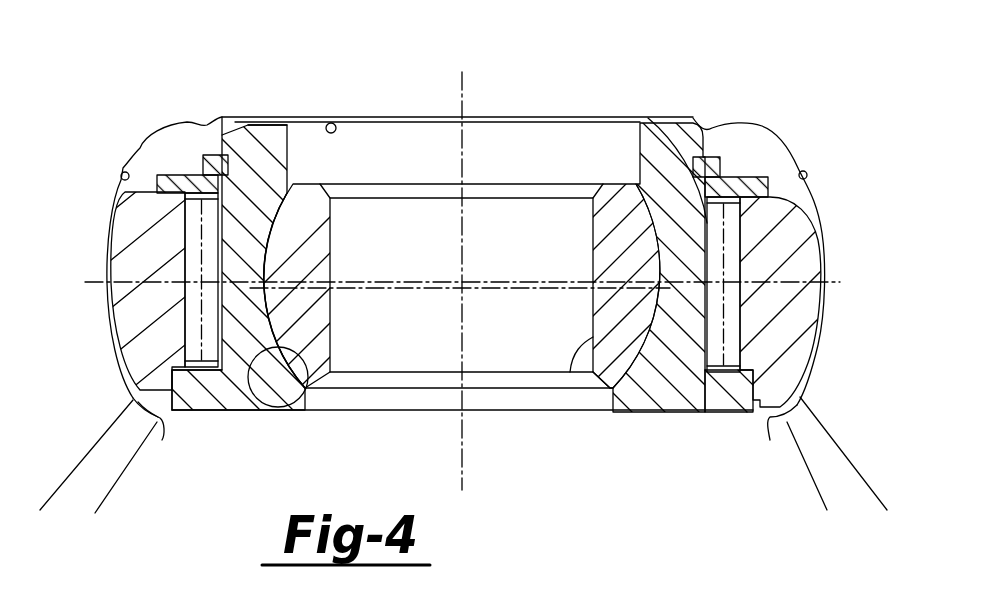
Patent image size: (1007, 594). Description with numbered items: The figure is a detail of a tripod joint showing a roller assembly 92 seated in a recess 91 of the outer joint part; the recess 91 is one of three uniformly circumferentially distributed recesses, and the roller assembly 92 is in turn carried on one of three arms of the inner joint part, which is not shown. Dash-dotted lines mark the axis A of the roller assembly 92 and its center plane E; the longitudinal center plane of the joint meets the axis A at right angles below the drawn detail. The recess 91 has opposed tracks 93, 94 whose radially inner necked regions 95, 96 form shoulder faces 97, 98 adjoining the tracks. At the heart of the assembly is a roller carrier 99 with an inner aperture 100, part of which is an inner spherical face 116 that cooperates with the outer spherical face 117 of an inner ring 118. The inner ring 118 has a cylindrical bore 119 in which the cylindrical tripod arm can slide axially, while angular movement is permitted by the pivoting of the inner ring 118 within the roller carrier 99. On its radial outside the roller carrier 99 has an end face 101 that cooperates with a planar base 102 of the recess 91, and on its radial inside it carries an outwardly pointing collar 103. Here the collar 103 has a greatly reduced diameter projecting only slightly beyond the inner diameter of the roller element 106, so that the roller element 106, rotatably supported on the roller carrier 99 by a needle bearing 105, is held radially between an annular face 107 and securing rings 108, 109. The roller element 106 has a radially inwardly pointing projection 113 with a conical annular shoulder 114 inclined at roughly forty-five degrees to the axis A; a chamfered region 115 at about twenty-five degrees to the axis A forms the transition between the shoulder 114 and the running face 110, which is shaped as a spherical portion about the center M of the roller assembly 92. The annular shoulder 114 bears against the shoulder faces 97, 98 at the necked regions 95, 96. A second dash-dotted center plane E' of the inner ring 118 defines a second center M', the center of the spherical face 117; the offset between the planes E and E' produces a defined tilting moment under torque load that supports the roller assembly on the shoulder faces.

The recess 91 is at (160, 124).
The roller assembly 92 is at (342, 155).
The track 93 is at (124, 172).
The track 94 is at (807, 171).
The necked region 95 is at (122, 427).
The necked region 96 is at (786, 425).
The shoulder face 97 is at (160, 422).
The shoulder face 98 is at (770, 417).
The roller carrier 99 is at (267, 130).
The inner aperture 100 is at (290, 147).
The end face 101 is at (250, 124).
The planar base 102 is at (338, 126).
The collar 103 is at (219, 412).
The needle bearing 105 is at (672, 125).
The roller element 106 is at (777, 207).
The annular face 107 is at (725, 367).
The securing ring 108 is at (709, 156).
The securing ring 109 is at (734, 176).
The running face 110 is at (823, 237).
The projection 113 is at (193, 405).
The conical annular shoulder 114 is at (133, 398).
The chamfered region 115 is at (133, 397).
The inner spherical face 116 is at (297, 408).
The outer spherical face 117 is at (247, 404).
The inner ring 118 is at (613, 382).
The cylindrical bore 119 is at (570, 372).
The axis A is at (470, 97).
The center plane E is at (441, 249).
The second center plane E' is at (362, 326).
The center M is at (460, 255).
The second center M' is at (436, 326).